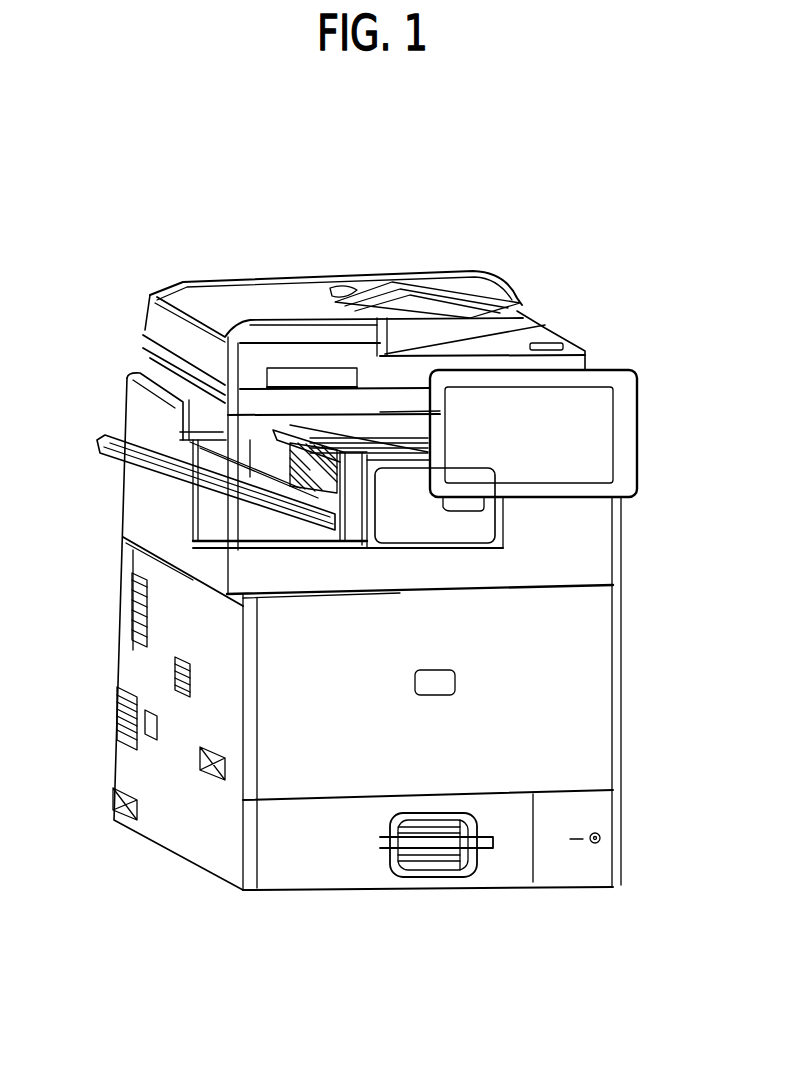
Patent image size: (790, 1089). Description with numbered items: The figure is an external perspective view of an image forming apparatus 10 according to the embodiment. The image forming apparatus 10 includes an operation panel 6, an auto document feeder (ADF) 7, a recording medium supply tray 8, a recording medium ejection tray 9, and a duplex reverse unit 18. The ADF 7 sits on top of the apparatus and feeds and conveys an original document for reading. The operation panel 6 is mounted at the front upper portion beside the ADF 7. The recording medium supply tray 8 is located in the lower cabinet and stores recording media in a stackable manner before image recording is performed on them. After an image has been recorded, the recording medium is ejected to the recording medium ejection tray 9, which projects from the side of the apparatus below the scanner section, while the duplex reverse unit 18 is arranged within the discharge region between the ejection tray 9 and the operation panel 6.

The image forming apparatus 10 is at (104, 254).
The duplex reverse unit 18 is at (385, 440).
The auto document feeder (ADF) 7 is at (522, 304).
The operation panel 6 is at (598, 430).
The recording medium ejection tray 9 is at (253, 487).
The recording medium supply tray 8 is at (477, 867).